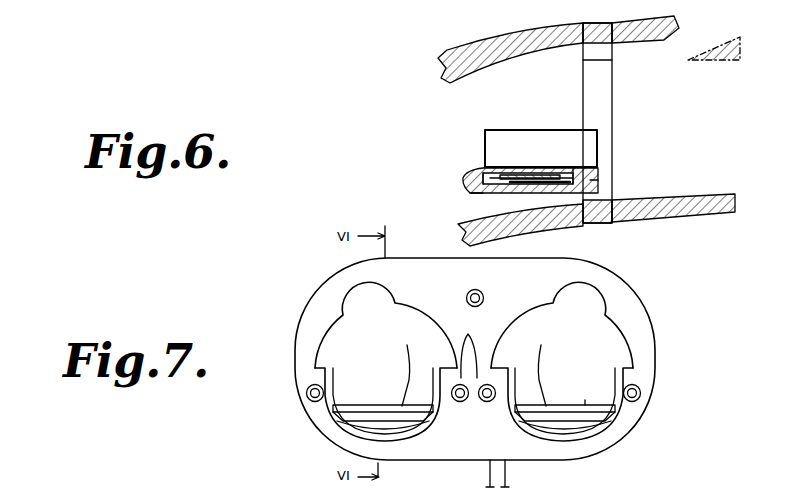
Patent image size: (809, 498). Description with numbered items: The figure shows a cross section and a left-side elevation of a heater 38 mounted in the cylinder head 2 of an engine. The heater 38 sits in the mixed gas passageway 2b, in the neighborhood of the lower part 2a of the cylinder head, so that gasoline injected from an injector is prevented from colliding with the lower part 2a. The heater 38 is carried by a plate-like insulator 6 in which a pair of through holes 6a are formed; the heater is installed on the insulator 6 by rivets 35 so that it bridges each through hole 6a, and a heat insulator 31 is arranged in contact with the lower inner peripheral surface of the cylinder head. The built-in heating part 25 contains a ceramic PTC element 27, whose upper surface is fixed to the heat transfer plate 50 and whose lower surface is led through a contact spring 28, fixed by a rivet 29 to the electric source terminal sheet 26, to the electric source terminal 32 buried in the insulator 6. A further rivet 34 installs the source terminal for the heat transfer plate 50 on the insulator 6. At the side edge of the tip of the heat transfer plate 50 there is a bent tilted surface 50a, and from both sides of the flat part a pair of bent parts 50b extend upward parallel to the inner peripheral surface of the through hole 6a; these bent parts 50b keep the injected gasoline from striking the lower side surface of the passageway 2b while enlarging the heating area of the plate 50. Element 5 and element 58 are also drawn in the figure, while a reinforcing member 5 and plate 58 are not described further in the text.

In FIG. 6, the cylinder head 2 is at (444, 74).
In FIG. 6, the lower part of the cylinder head 2a is at (515, 226).
In FIG. 6, the mixed gas passageway 2b is at (460, 112).
In FIG. 6, the reinforcing member 5 is at (662, 40).
In FIG. 6, the insulator 6 is at (598, 42).
In FIG. 7, the insulator 6 is at (640, 302).
In FIG. 6, the through holes 6a is at (605, 107).
In FIG. 7, the through holes 6a is at (640, 340).
In FIG. 6, the heating part 25 is at (545, 176).
In FIG. 6, the electric source terminal sheet 26 is at (599, 186).
In FIG. 6, the PTC element 27 is at (497, 170).
In FIG. 6, the contact spring 28 is at (558, 180).
In FIG. 6, the rivet 29 is at (600, 168).
In FIG. 6, the heat insulator 31 is at (488, 190).
In FIG. 7, the electric source terminal 32 is at (507, 470).
In FIG. 7, the rivet 34 is at (469, 290).
In FIG. 7, the rivets 35 is at (307, 390).
In FIG. 6, the heater 38 is at (549, 130).
In FIG. 7, the heater 38 is at (474, 368).
In FIG. 6, the heat transfer plate 50 is at (518, 172).
In FIG. 7, the heat transfer plate 50 is at (585, 400).
In FIG. 6, the bent tilted surface 50a is at (462, 172).
In FIG. 6, the bent parts 50b is at (517, 110).
In FIG. 7, the bent parts 50b is at (327, 398).
In FIG. 7, the plate 58 is at (402, 408).